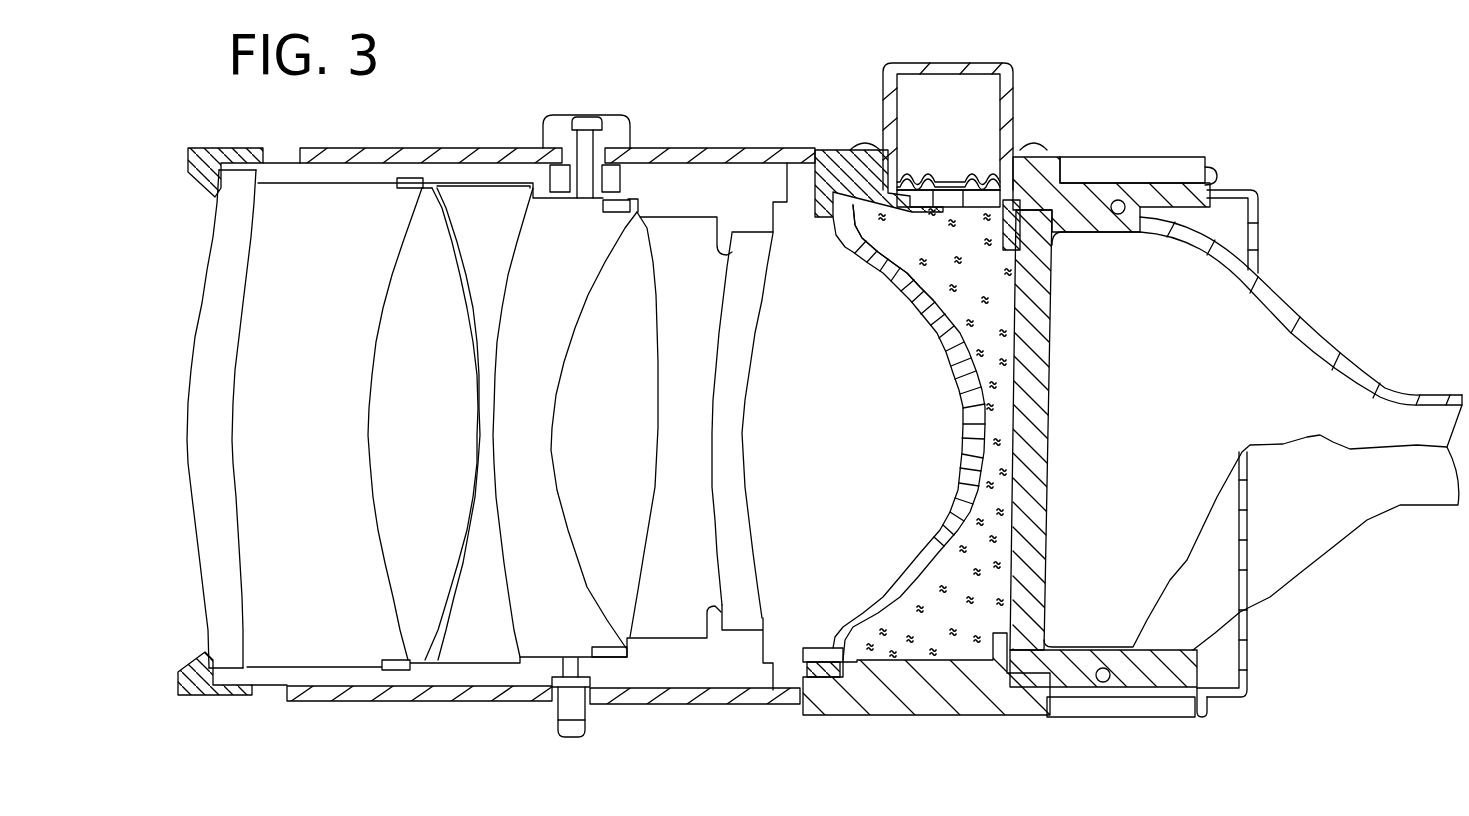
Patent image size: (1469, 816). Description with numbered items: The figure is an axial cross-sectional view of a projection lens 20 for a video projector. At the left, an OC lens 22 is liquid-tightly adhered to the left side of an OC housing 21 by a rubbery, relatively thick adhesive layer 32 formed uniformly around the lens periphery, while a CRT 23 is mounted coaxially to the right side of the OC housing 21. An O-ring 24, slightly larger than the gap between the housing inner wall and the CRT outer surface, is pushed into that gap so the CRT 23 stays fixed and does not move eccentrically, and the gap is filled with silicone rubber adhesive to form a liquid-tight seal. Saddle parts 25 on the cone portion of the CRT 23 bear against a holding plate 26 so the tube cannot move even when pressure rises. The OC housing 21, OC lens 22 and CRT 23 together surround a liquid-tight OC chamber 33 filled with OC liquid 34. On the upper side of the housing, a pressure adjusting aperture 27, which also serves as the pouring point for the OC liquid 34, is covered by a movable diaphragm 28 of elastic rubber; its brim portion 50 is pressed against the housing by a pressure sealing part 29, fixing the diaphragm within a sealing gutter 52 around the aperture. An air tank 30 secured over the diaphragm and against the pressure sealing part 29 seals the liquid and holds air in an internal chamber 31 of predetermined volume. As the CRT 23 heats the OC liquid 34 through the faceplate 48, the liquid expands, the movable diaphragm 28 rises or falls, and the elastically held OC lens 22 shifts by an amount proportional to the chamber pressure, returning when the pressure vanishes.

The projection lens 20 is at (833, 748).
The OC housing 21 is at (963, 703).
The OC lens 22 is at (907, 290).
The CRT 23 is at (1275, 590).
The O-ring 24 is at (1122, 214).
The saddle parts 25 is at (1245, 643).
The holding plate 26 is at (1242, 700).
The pressure adjusting aperture 27 is at (911, 234).
The movable diaphragm 28 is at (960, 192).
The pressure sealing part 29 is at (1055, 237).
The air tank 30 is at (885, 92).
The internal chamber 31 is at (923, 107).
The adhesive layer 32 is at (815, 152).
The OC chamber 33 is at (982, 340).
The OC liquid 34 is at (968, 543).
The faceplate 48 is at (1047, 386).
The brim portion 50 is at (937, 190).
The sealing gutter 52 is at (1005, 172).